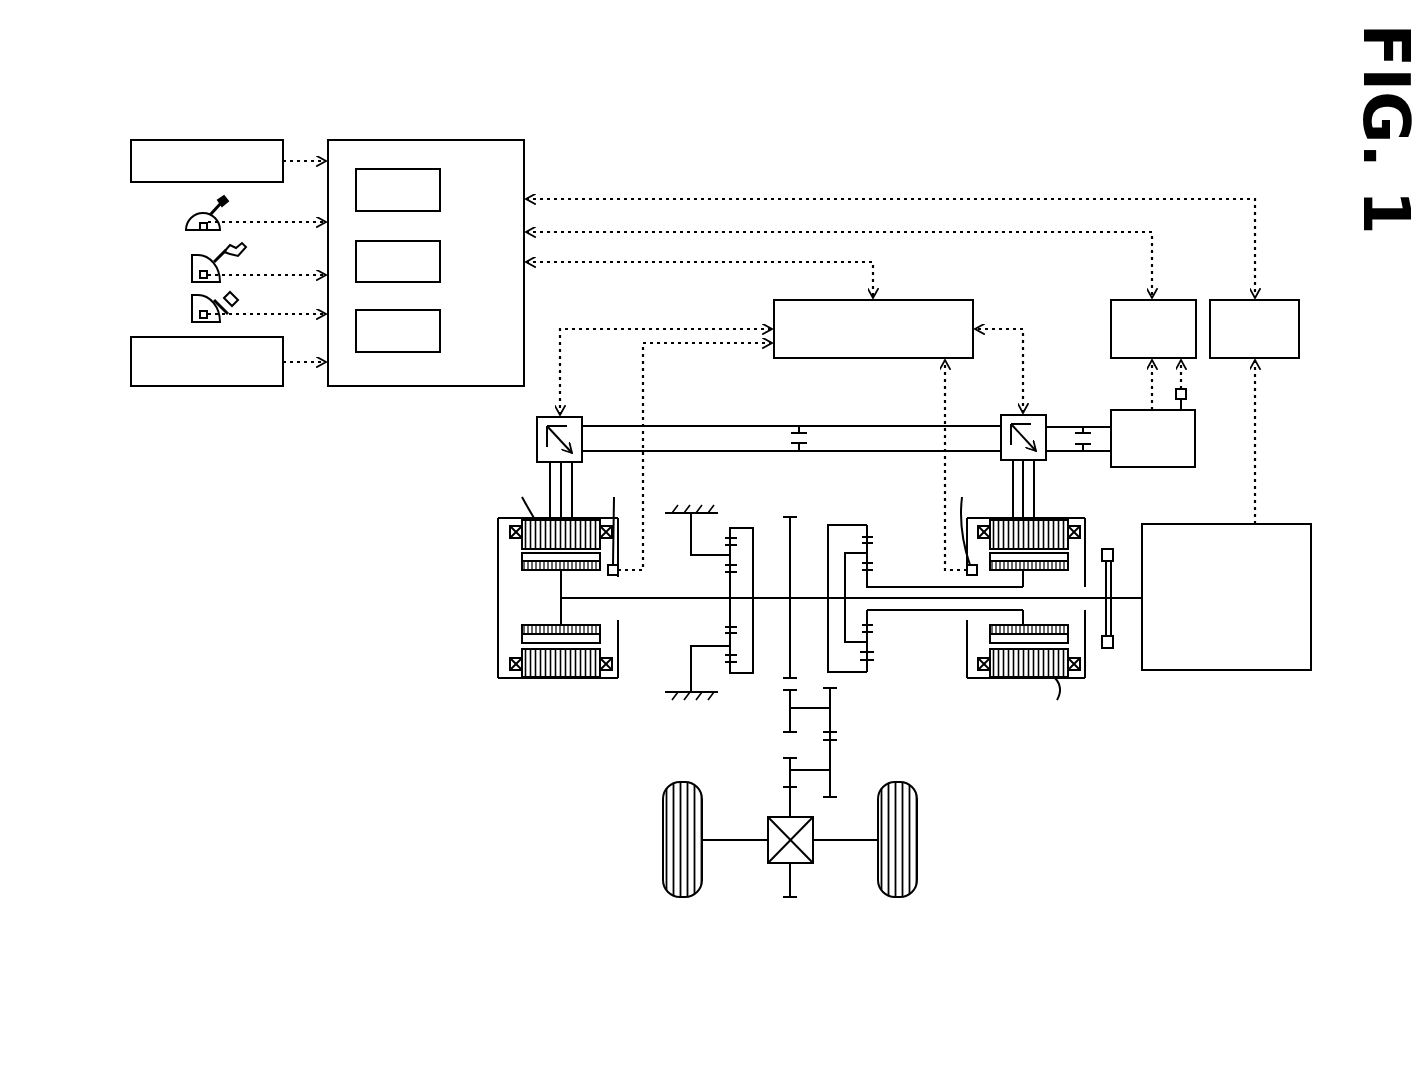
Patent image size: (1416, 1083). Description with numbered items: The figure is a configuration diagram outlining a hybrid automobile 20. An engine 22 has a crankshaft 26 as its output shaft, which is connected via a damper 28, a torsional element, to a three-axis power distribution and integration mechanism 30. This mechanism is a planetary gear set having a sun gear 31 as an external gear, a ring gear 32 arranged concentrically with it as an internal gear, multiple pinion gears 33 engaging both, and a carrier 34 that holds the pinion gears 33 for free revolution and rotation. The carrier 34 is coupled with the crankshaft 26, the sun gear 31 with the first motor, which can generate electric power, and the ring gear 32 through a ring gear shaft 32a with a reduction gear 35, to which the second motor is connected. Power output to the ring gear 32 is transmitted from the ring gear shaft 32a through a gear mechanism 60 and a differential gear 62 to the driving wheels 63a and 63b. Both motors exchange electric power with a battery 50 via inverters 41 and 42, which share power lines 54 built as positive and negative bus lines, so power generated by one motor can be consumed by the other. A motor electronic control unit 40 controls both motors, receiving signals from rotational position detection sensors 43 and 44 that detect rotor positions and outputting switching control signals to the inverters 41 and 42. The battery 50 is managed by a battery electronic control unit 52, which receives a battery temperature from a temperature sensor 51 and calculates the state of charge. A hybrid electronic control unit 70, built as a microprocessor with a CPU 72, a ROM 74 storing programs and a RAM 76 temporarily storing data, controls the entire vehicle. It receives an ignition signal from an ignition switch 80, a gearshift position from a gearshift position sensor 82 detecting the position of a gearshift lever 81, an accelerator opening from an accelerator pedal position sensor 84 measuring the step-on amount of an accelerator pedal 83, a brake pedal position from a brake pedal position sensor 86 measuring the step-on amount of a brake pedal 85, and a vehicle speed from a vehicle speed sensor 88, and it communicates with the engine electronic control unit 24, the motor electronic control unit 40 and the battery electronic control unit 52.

The hybrid automobile 20 is at (1056, 167).
The engine 22 is at (1311, 583).
The engine electronic control unit 24 is at (1272, 300).
The crankshaft 26 is at (1123, 598).
The damper 28 is at (1111, 648).
The power distribution and integration mechanism 30 is at (887, 581).
The sun gear 31 is at (870, 612).
The ring gear 32 is at (870, 665).
The ring gear shaft 32a is at (773, 598).
The pinion gears 33 is at (870, 640).
The carrier 34 is at (845, 553).
The reduction gear 35 is at (734, 506).
The motor electronic control unit 40 is at (912, 300).
The inverter 41 is at (1040, 415).
The inverter 42 is at (572, 417).
The rotational position detection sensor 43 is at (976, 522).
The rotational position detection sensor 44 is at (610, 522).
The battery 50 is at (1152, 467).
The temperature sensor 51 is at (1190, 393).
The battery electronic control unit 52 is at (1128, 300).
The power lines 54 is at (858, 447).
The gear mechanism 60 is at (874, 749).
The differential gear 62 is at (813, 855).
The driving wheel 63a is at (663, 875).
The driving wheel 63b is at (917, 875).
The hybrid electronic control unit 70 is at (426, 242).
The CPU 72 is at (440, 190).
The ROM 74 is at (440, 262).
The RAM 76 is at (440, 331).
The ignition switch 80 is at (131, 154).
The gearshift lever 81 is at (216, 206).
The gearshift position sensor 82 is at (198, 225).
The accelerator pedal 83 is at (213, 262).
The accelerator pedal position sensor 84 is at (199, 275).
The brake pedal 85 is at (213, 300).
The brake pedal position sensor 86 is at (199, 315).
The vehicle speed sensor 88 is at (131, 356).